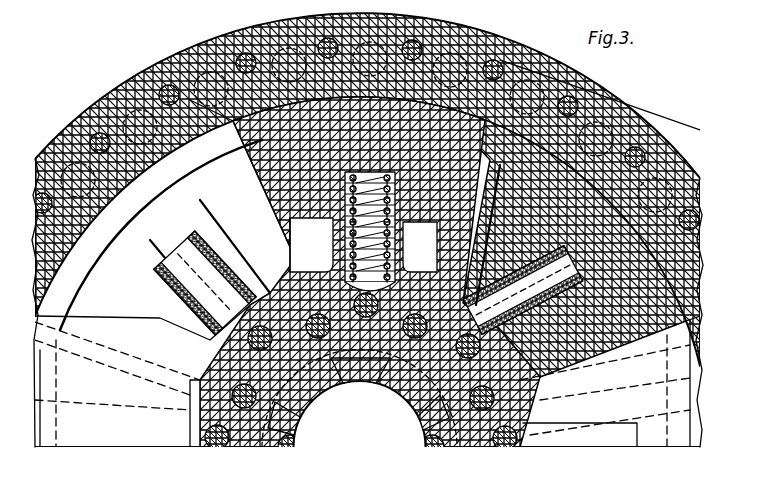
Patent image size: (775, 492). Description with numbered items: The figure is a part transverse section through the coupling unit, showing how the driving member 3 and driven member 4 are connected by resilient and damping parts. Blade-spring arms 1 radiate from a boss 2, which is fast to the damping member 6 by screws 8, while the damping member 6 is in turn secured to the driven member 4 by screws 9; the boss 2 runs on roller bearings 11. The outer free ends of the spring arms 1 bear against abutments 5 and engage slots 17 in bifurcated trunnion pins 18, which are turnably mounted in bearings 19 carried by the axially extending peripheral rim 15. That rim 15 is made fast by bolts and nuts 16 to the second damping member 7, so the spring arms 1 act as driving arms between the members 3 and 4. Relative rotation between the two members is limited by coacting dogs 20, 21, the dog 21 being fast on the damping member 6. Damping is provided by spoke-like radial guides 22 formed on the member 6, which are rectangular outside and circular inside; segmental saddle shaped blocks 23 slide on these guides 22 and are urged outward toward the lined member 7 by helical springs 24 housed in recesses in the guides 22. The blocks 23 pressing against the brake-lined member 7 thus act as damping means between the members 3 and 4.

The spring arms 1 is at (250, 180).
The boss 2 is at (370, 231).
The driving member 3 is at (560, 180).
The driven member 4 is at (363, 245).
The abutments 5 is at (195, 180).
The damping member 6 is at (440, 440).
The damping member 7 is at (100, 245).
The screws 8 is at (244, 400).
The screws 9 is at (300, 370).
The roller bearings 11 is at (340, 383).
The peripheral rim 15 is at (470, 75).
The bolts and nuts 16 is at (172, 92).
The slots 17 is at (148, 110).
The bifurcated trunnion pins 18 is at (118, 135).
The bearings 19 is at (155, 110).
The dog 20 is at (380, 395).
The dog 21 is at (405, 388).
The radial guides 22 is at (232, 262).
The segmental saddle shaped blocks 23 is at (590, 380).
The helical springs 24 is at (285, 228).